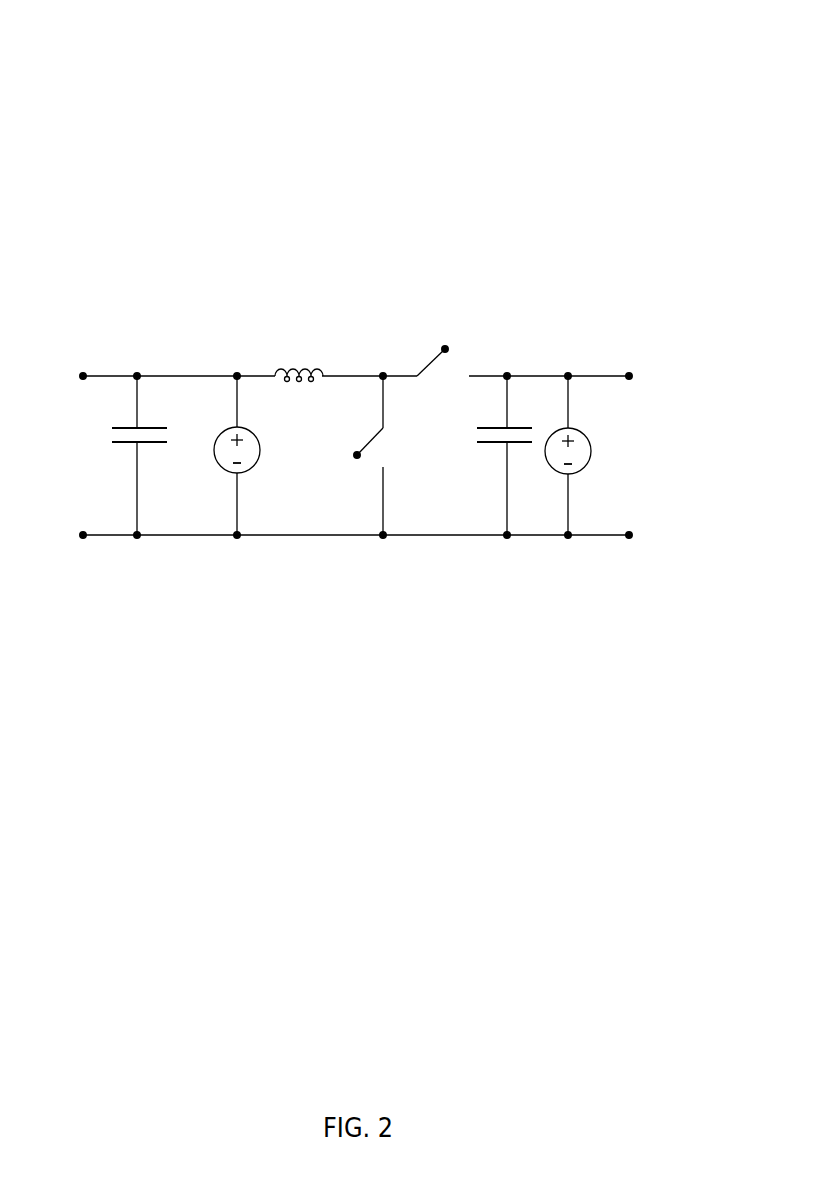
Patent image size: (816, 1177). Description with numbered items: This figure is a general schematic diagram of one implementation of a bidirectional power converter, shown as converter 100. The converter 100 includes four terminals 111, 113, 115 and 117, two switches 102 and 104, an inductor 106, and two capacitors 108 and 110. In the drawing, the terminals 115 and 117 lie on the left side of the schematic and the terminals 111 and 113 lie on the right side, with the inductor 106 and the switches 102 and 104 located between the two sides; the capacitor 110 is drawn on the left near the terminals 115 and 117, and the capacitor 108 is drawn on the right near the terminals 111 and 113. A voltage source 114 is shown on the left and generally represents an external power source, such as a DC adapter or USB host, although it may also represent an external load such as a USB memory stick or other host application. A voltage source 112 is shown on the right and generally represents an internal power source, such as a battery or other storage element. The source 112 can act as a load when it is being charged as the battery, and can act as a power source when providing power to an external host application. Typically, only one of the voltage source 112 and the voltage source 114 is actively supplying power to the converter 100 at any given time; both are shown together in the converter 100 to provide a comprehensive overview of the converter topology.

The converter 100 is at (718, 33).
The switch 102 is at (433, 355).
The switch 104 is at (346, 456).
The inductor 106 is at (310, 364).
The capacitor 108 is at (475, 435).
The capacitor 110 is at (111, 435).
The terminal 111 is at (631, 369).
The voltage source 112 is at (590, 422).
The terminal 113 is at (645, 535).
The voltage source 114 is at (251, 428).
The terminal 115 is at (84, 369).
The terminal 117 is at (72, 535).